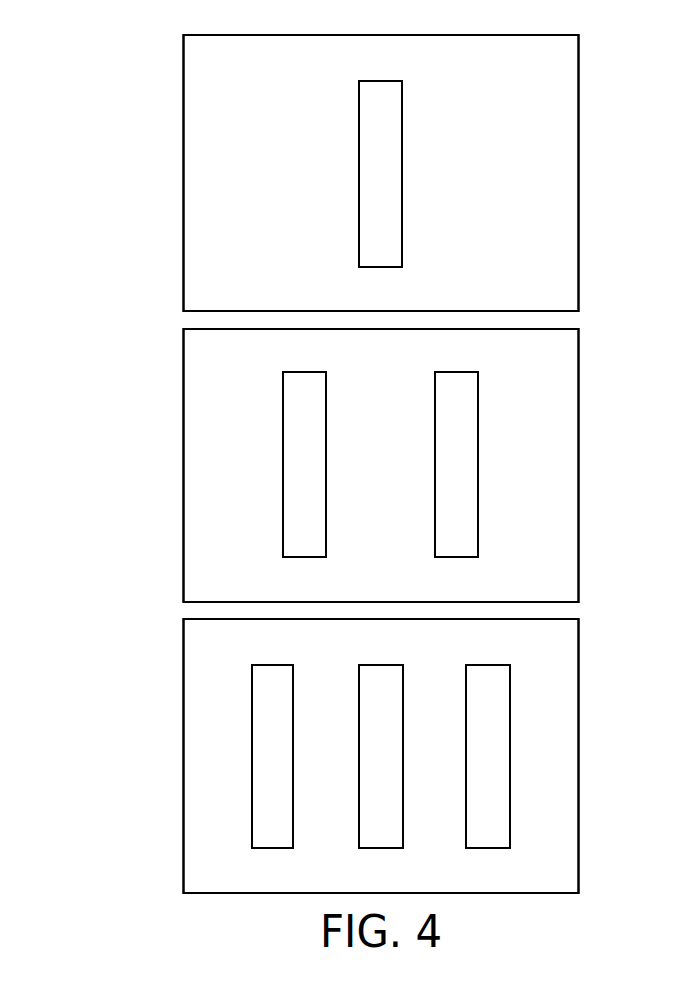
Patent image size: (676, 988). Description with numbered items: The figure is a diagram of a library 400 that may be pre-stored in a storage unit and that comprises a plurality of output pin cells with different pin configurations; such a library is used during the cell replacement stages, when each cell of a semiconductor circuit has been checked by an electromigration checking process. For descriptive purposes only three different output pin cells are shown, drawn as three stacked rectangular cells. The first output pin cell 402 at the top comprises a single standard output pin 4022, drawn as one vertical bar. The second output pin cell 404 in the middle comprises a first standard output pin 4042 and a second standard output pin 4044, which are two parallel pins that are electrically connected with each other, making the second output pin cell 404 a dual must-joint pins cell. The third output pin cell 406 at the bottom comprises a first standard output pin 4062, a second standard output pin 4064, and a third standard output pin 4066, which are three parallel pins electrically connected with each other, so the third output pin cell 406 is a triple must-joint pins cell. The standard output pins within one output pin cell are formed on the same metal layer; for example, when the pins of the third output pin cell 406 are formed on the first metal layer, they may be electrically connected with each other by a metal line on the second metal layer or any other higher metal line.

The library 400 is at (106, 64).
The first output pin cell 402 is at (578, 173).
The single standard output pin 4022 is at (402, 173).
The second output pin cell 404 is at (578, 465).
The first standard output pin 4042 is at (283, 465).
The second standard output pin 4044 is at (478, 465).
The third output pin cell 406 is at (578, 755).
The first standard output pin 4062 is at (293, 678).
The second standard output pin 4064 is at (403, 680).
The third standard output pin 4066 is at (510, 680).